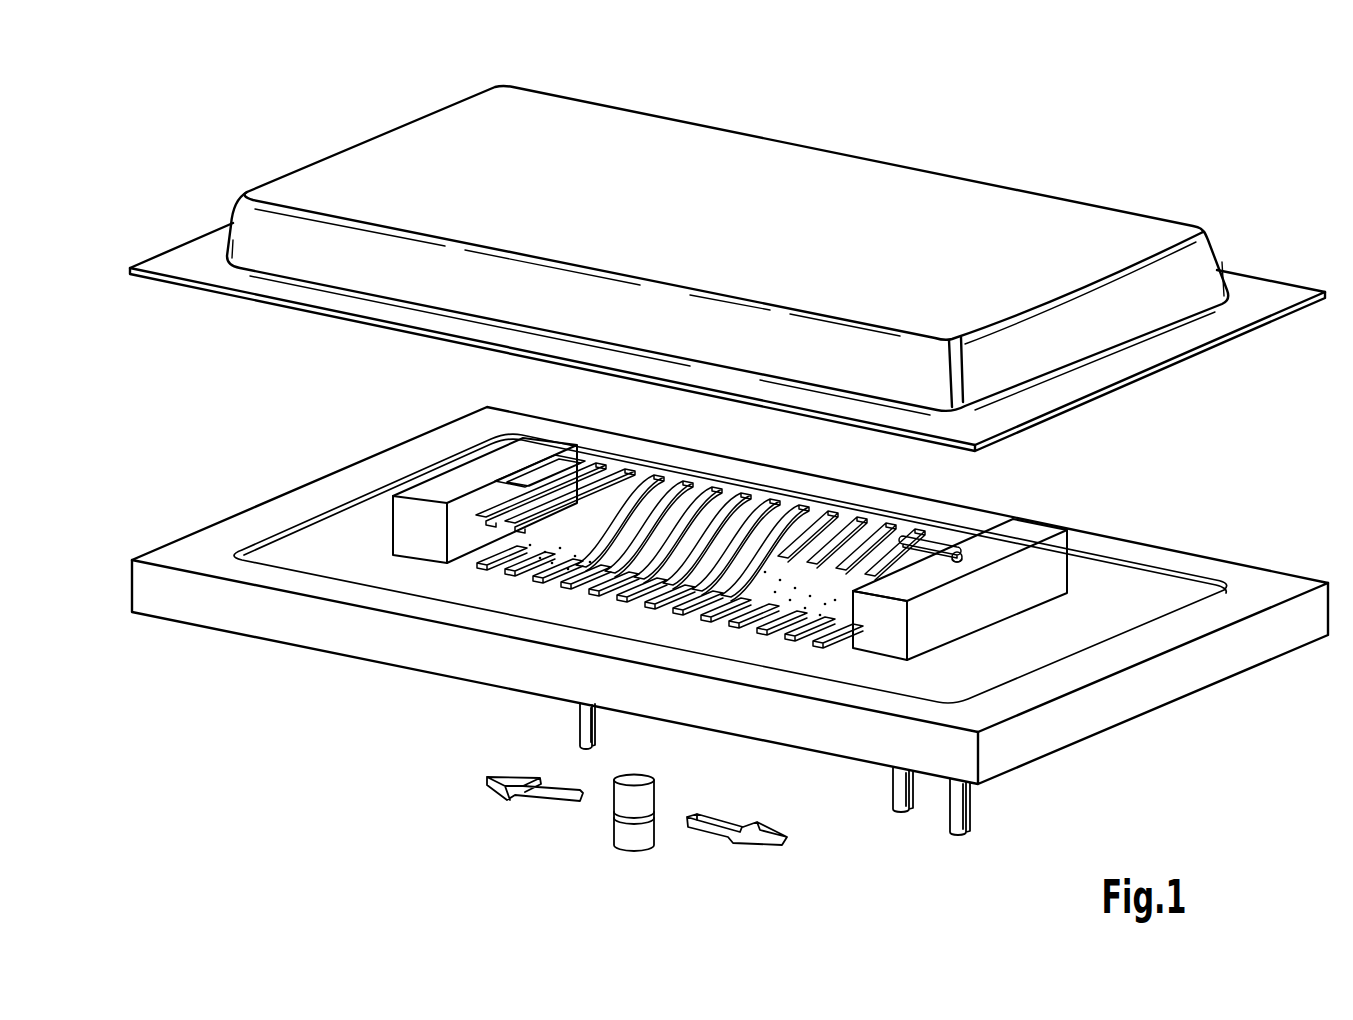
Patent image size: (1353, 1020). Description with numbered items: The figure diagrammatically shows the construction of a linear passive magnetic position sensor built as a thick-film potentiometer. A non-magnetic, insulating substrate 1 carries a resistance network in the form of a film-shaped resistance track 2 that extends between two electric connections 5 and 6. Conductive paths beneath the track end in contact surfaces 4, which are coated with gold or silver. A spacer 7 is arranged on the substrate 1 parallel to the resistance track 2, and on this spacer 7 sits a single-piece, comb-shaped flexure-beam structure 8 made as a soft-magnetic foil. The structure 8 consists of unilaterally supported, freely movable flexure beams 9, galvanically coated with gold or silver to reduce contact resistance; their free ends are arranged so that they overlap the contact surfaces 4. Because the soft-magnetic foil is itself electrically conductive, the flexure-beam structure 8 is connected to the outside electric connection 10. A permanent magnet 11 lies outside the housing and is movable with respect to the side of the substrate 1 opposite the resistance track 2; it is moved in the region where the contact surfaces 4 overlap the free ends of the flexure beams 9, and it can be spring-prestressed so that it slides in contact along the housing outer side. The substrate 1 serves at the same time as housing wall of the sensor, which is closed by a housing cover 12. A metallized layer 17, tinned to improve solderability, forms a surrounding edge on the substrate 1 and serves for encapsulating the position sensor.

The non-magnetic substrate 1 is at (175, 607).
The resistance track 2 is at (517, 560).
The contact surface 4 is at (478, 557).
The electric connection 5 is at (582, 713).
The electric connection 6 is at (903, 815).
The spacer 7 is at (1020, 602).
The flexure-beam structure 8 is at (1010, 530).
The flexure beam 9 is at (940, 537).
The electric connection 10 is at (960, 835).
The permanent magnet 11 is at (622, 838).
The housing cover 12 is at (1163, 228).
The metallized layer 17 is at (1267, 578).